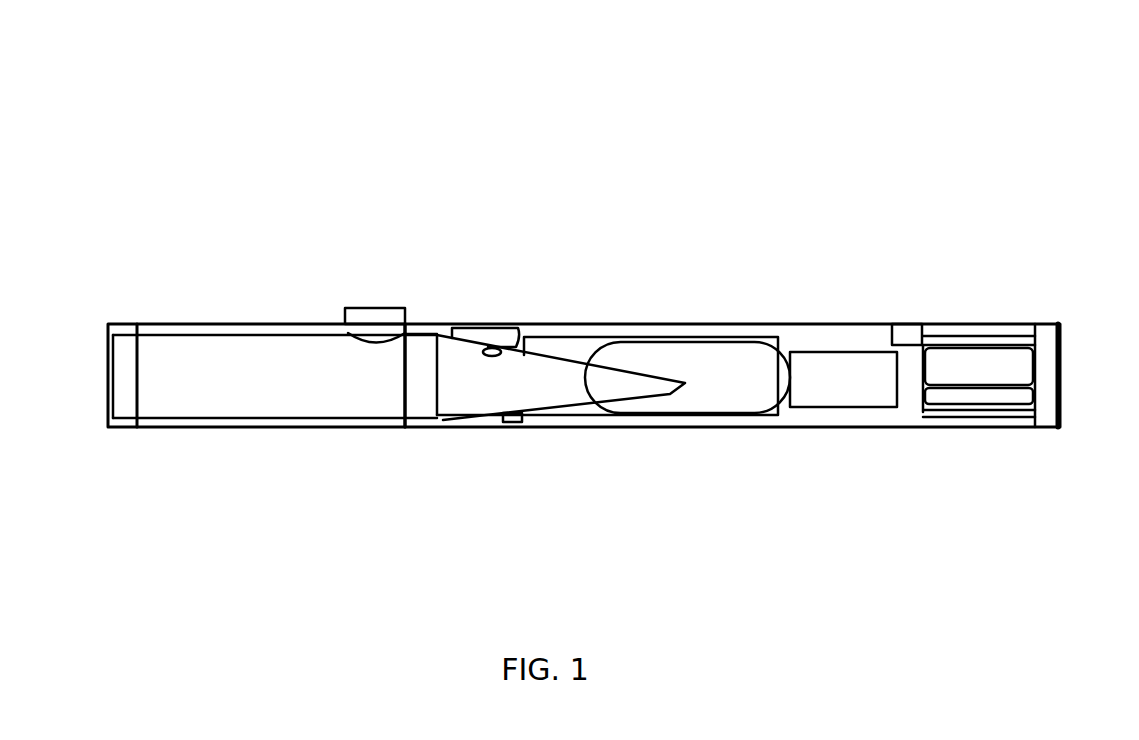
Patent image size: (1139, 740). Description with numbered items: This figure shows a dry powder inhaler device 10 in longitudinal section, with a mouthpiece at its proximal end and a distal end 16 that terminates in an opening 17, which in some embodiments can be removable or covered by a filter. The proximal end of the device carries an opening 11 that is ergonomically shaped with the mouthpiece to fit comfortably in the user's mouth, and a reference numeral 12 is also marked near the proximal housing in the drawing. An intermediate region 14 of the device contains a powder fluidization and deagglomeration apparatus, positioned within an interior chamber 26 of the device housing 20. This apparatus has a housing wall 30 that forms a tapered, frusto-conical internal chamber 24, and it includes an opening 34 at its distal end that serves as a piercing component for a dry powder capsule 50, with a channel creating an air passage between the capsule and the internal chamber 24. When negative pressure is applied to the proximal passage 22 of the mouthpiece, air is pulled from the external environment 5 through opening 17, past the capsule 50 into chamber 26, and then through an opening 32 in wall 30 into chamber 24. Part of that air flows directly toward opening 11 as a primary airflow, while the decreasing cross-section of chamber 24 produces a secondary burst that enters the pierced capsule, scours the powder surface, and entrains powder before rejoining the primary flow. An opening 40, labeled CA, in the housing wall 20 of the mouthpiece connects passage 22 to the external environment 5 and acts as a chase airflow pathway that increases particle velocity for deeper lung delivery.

The external environment 5 is at (354, 145).
The device 10 is at (509, 126).
The opening 11 is at (97, 366).
The housing 12 is at (182, 318).
The intermediate region 14 is at (490, 437).
The distal end 16 is at (966, 314).
The opening 17 is at (1062, 369).
The housing 20 is at (255, 324).
The proximal passage 22 is at (313, 405).
The internal chamber 24 is at (468, 395).
The interior chamber 26 is at (507, 430).
The housing wall 30 is at (540, 338).
The opening 32 is at (493, 348).
The opening 34 is at (677, 382).
The opening 40 is at (405, 323).
The dry powder capsule 50 is at (743, 347).